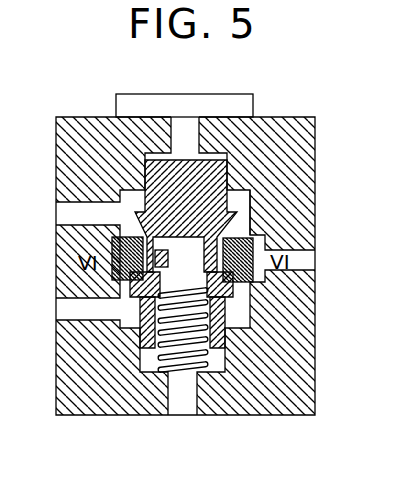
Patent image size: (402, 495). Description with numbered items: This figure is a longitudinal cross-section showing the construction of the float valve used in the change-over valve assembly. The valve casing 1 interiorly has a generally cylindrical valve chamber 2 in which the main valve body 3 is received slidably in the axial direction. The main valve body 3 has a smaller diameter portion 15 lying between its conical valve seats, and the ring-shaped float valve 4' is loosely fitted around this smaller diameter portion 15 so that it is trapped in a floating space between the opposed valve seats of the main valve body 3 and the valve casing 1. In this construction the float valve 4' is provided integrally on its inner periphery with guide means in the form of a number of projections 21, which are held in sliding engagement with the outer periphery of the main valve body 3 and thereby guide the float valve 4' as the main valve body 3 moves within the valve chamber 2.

The valve casing 1 is at (271, 118).
The valve chamber 2 is at (248, 197).
The main valve body 3 is at (185, 159).
The float valve 4' is at (138, 249).
The smaller diameter portion 15 is at (186, 216).
The projections 21 is at (160, 262).